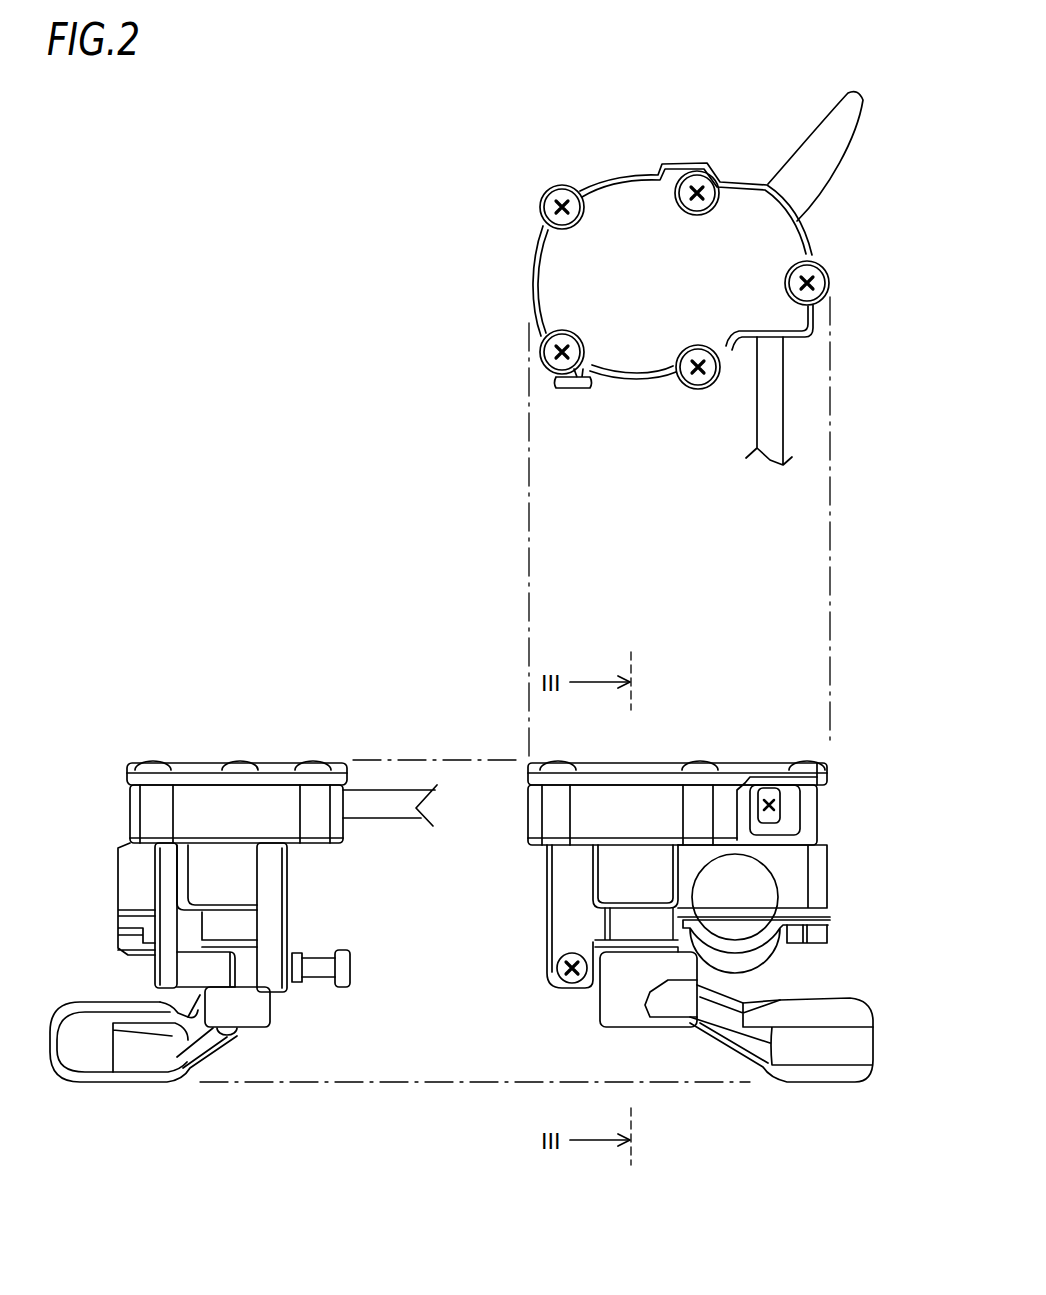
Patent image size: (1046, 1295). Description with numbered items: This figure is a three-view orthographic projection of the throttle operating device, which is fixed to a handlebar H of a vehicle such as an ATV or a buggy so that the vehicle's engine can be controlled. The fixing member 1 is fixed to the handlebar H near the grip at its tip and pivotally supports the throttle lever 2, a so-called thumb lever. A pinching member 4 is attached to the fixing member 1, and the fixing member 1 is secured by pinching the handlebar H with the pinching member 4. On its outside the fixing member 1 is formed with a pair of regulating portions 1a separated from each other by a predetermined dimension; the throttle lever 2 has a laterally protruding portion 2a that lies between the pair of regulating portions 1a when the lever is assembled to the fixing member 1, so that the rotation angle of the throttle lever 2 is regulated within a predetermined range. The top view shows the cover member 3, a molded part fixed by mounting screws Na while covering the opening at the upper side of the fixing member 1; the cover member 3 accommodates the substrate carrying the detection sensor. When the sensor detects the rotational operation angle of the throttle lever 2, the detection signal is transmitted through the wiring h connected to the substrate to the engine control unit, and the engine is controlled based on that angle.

The fixing member 1 is at (128, 820).
The regulating portions 1a is at (290, 933).
The throttle lever 2 is at (817, 123).
The protruding portion 2a is at (227, 978).
The cover member 3 is at (543, 262).
The pinching member 4 is at (757, 950).
The mounting screw Na is at (546, 190).
The wiring h is at (757, 433).
The handlebar H is at (795, 875).